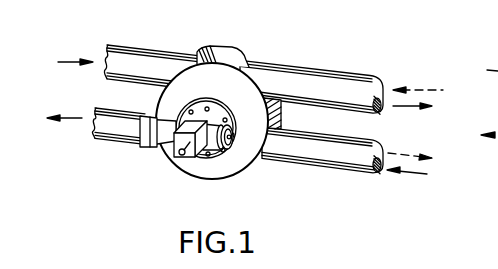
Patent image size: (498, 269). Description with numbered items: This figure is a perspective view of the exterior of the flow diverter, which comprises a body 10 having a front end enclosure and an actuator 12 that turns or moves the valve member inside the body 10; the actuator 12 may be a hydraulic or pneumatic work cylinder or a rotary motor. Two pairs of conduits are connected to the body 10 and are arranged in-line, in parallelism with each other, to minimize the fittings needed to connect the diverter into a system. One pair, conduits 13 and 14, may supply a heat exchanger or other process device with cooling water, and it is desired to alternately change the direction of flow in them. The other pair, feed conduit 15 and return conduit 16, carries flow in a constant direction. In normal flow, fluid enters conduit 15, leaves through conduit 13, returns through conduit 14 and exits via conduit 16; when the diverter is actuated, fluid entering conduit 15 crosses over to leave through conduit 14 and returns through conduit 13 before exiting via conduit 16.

The body 10 is at (240, 56).
The actuator 12 is at (172, 142).
The conduit 13 is at (330, 83).
The conduit 14 is at (352, 158).
The feed conduit 15 is at (150, 60).
The return conduit 16 is at (115, 128).